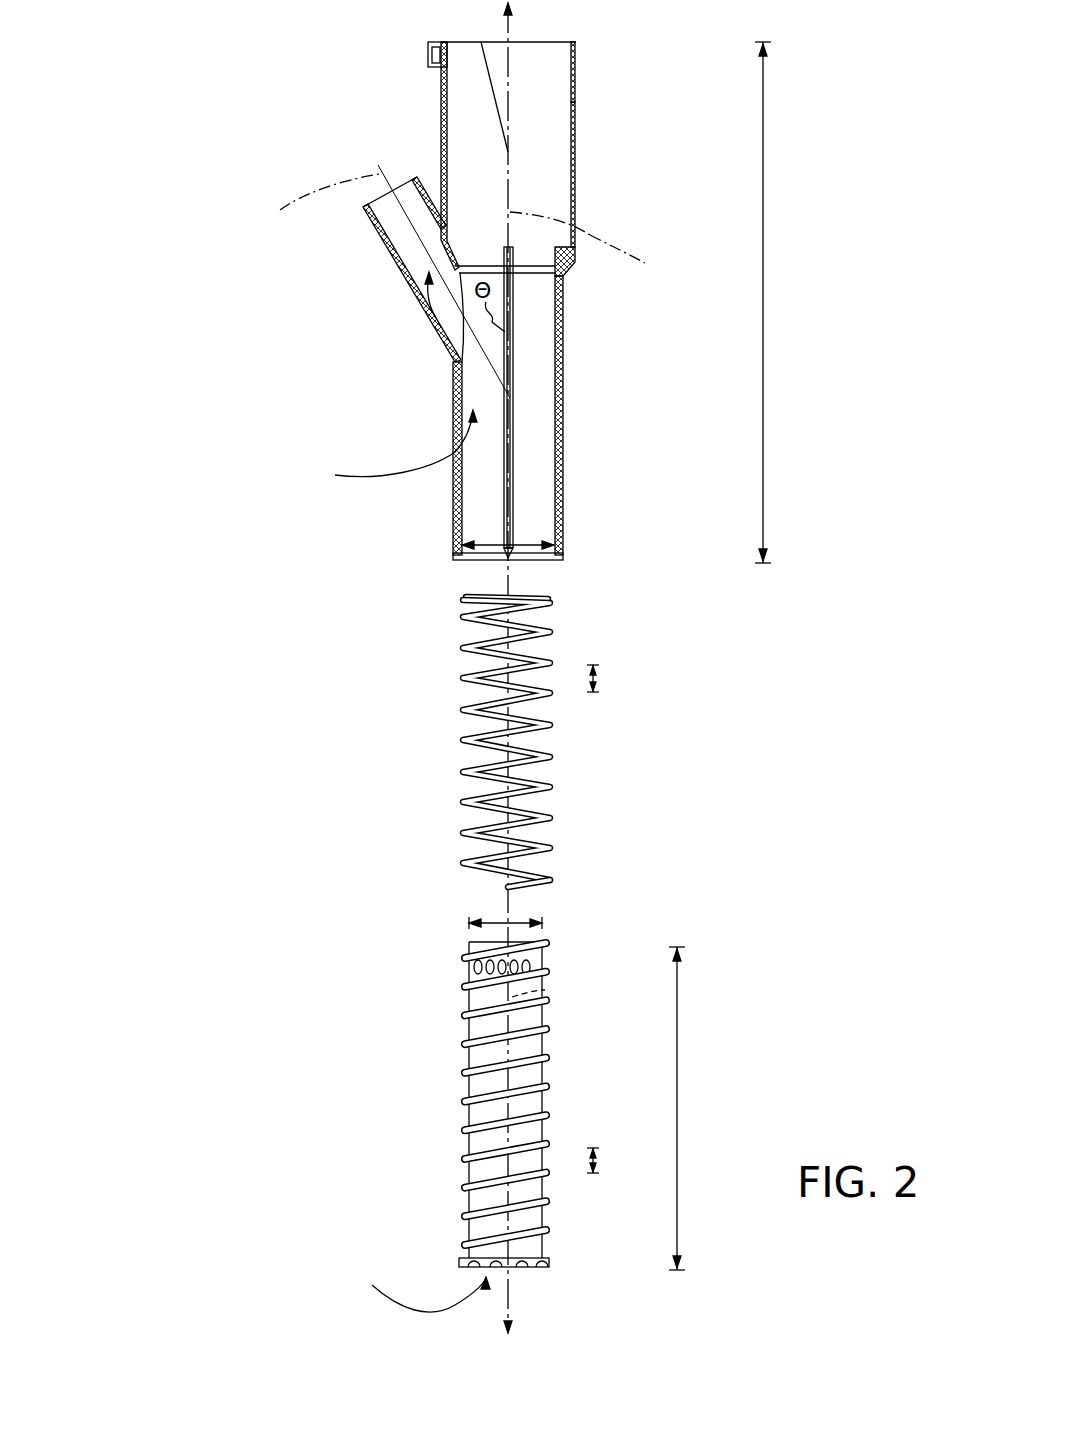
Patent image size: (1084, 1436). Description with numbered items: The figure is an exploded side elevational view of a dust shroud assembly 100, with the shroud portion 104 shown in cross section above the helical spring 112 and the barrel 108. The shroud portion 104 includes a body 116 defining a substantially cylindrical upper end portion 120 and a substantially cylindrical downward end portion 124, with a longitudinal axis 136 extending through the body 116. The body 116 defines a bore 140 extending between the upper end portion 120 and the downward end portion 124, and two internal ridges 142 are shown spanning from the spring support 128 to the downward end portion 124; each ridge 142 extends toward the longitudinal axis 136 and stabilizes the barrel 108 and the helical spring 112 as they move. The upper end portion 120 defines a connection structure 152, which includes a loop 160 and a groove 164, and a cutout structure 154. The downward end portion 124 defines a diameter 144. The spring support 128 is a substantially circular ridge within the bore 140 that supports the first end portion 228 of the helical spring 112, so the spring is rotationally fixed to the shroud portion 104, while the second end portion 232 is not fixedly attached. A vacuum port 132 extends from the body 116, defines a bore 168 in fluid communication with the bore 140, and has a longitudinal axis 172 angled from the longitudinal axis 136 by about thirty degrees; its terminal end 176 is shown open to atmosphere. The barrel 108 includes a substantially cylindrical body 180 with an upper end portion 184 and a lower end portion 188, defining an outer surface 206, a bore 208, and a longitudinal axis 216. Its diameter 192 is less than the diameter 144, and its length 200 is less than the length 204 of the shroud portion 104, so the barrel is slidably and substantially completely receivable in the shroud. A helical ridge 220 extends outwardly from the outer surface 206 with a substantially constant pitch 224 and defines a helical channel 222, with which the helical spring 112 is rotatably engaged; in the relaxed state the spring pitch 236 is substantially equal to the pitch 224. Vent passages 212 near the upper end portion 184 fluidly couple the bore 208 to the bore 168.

The dust shroud assembly 100 is at (106, 242).
The shroud portion 104 is at (576, 147).
The barrel 108 is at (485, 1057).
The helical spring 112 is at (465, 708).
The body 116 is at (576, 200).
The upper end portion 120 is at (562, 40).
The downward end portion 124 is at (479, 560).
The spring support 128 is at (530, 272).
The vacuum port 132 is at (388, 255).
The longitudinal axis 136 is at (625, 257).
The bore 140 is at (377, 458).
The internal ridge 142 is at (560, 354).
The diameter 144 is at (534, 549).
The connection structure 152 is at (393, 52).
The cutout structure 154 is at (492, 95).
The loop 160 is at (428, 72).
The groove 164 is at (576, 52).
The bore 168 is at (425, 315).
The longitudinal axis 172 is at (371, 281).
The terminal end 176 is at (368, 197).
The body 180 is at (485, 1027).
The upper end portion 184 is at (469, 942).
The lower end portion 188 is at (527, 1268).
The diameter 192 is at (492, 914).
The length 200 is at (678, 1080).
The length 204 is at (765, 388).
The outer surface 206 is at (468, 1126).
The bore 208 is at (408, 1287).
The vent passage 212 is at (467, 965).
The longitudinal axis 216 is at (545, 990).
The helical ridge 220 is at (540, 1048).
The helical channel 222 is at (468, 1173).
The pitch 224 is at (600, 1160).
The first end portion 228 is at (466, 598).
The second end portion 232 is at (520, 887).
The pitch 236 is at (600, 678).